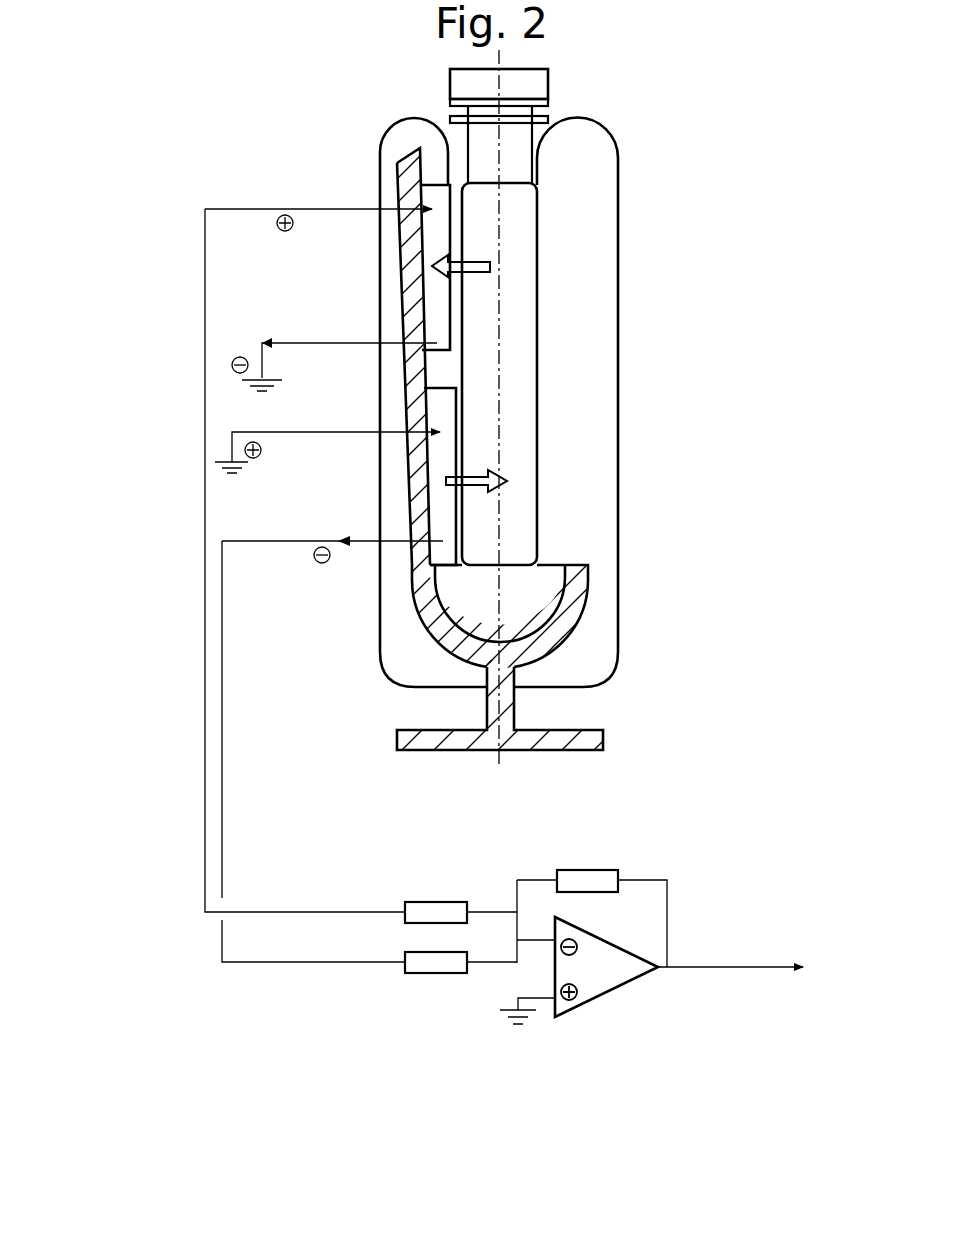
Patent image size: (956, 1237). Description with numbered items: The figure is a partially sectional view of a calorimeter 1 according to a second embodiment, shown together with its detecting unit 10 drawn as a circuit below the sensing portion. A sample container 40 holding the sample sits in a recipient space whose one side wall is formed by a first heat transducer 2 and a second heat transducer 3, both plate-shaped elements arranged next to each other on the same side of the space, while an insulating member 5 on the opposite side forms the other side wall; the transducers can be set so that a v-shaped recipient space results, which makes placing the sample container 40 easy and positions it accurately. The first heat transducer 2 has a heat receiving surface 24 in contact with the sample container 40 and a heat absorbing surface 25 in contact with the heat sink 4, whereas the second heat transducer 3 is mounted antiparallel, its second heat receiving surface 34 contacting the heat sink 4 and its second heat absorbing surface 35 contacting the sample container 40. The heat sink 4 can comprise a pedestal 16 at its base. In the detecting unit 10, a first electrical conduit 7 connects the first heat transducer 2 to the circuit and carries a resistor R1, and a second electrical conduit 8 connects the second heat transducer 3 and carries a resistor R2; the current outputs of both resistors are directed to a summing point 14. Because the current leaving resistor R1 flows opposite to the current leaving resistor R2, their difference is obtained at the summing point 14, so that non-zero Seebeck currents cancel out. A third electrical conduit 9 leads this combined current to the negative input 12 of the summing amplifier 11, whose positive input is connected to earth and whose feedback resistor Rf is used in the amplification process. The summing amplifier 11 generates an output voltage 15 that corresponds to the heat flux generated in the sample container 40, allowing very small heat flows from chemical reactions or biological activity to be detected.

The calorimeter 1 is at (223, 125).
The first heat transducer 2 is at (438, 279).
The second heat transducer 3 is at (435, 462).
The heat sink 4 is at (433, 621).
The insulating member 5 is at (608, 629).
The first electrical conduit 7 is at (205, 482).
The second electrical conduit 8 is at (222, 792).
The third electrical conduit 9 is at (533, 935).
The detecting unit 10 is at (598, 1022).
The summing amplifier 11 is at (617, 958).
The negative input 12 is at (562, 953).
The summing point 14 is at (518, 940).
The output voltage 15 is at (748, 968).
The pedestal 16 is at (397, 731).
The heat receiving surface 24 is at (440, 246).
The heat absorbing surface 25 is at (427, 313).
The second heat receiving surface 34 is at (423, 412).
The second heat absorbing surface 35 is at (450, 512).
The sample container 40 is at (520, 442).
The resistor R1 is at (435, 912).
The resistor R2 is at (437, 958).
The resistor Rf is at (592, 880).